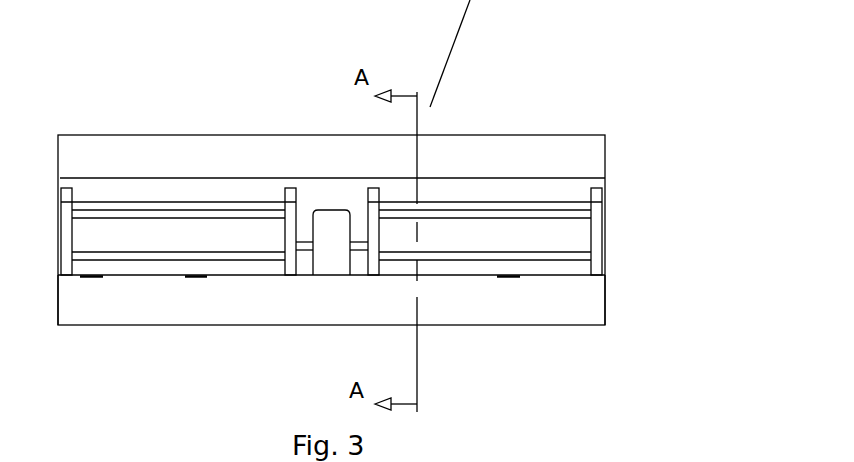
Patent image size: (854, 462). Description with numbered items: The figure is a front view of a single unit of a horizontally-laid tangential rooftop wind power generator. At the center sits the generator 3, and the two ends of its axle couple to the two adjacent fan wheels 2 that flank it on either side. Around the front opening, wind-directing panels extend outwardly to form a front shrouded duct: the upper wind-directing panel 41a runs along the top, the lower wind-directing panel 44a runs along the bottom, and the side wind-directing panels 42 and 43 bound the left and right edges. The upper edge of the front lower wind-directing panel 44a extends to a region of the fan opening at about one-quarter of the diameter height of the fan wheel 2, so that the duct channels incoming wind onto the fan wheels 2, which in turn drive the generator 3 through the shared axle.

The fan wheel 2 is at (178, 166).
The generator 3 is at (297, 145).
The upper wind-directing panel 41a is at (331, 112).
The side wind-directing panel 42 is at (58, 289).
The side wind-directing panel 43 is at (605, 293).
The lower wind-directing panel 44a is at (331, 338).